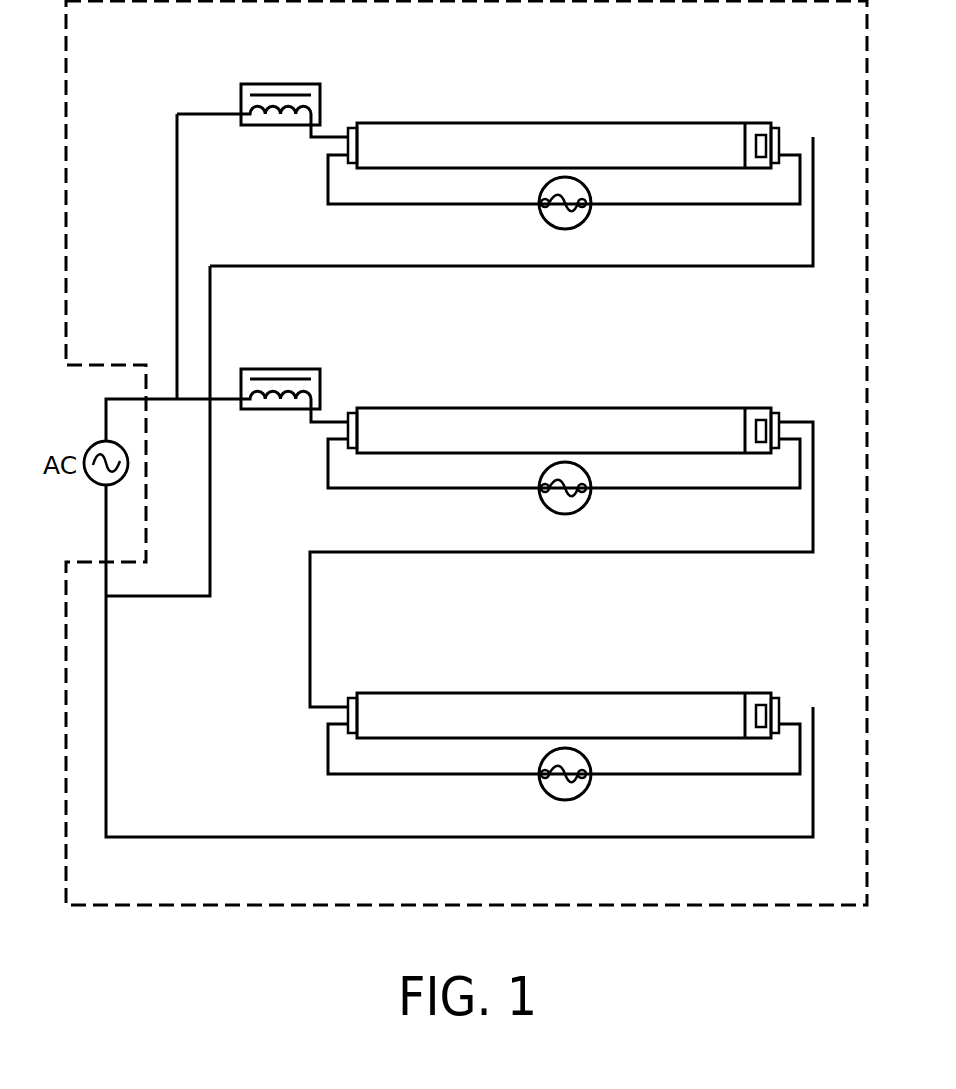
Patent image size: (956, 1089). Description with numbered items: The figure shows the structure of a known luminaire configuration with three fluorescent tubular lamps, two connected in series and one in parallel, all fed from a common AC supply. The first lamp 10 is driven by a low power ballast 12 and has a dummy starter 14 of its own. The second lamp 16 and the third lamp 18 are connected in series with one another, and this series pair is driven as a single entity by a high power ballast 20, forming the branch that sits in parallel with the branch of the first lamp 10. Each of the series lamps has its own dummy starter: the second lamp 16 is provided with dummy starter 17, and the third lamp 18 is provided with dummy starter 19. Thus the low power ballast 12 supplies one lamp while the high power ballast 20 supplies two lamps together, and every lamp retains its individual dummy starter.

The first lamp 10 is at (563, 123).
The low power ballast 12 is at (281, 83).
The dummy starter 14 is at (543, 218).
The second lamp 16 is at (563, 408).
The dummy starter 17 is at (543, 503).
The third lamp 18 is at (563, 691).
The dummy starter 19 is at (544, 789).
The high power ballast 20 is at (281, 368).